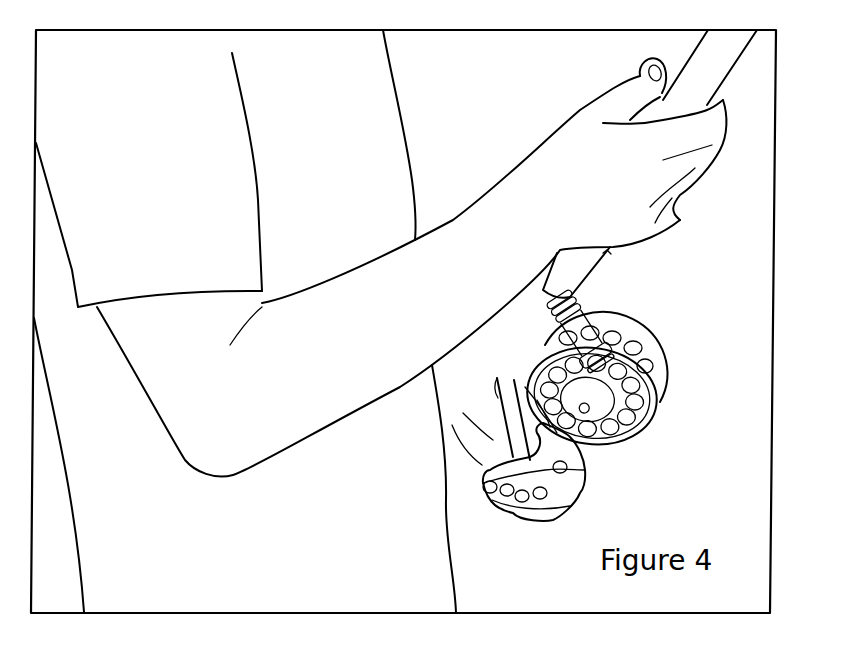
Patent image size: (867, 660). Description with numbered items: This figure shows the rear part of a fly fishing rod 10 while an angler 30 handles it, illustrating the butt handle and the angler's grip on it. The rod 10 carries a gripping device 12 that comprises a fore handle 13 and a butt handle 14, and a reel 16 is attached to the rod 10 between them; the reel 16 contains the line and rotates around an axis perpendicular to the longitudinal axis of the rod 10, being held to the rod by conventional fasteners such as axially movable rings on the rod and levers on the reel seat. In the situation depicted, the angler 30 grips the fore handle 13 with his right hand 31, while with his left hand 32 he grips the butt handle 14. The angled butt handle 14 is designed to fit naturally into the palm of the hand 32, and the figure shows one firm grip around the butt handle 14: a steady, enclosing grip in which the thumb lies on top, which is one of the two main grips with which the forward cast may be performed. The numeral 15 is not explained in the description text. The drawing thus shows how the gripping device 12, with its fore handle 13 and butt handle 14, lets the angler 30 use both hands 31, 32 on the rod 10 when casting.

The fishing rod 10 is at (625, 97).
The gripping device 12 is at (600, 260).
The fore handle 13 is at (743, 58).
The butt handle 14 is at (553, 478).
The rod butt 15 is at (503, 437).
The reel 16 is at (648, 403).
The angler 30 is at (380, 110).
The right hand 31 is at (545, 193).
The left hand 32 is at (450, 402).